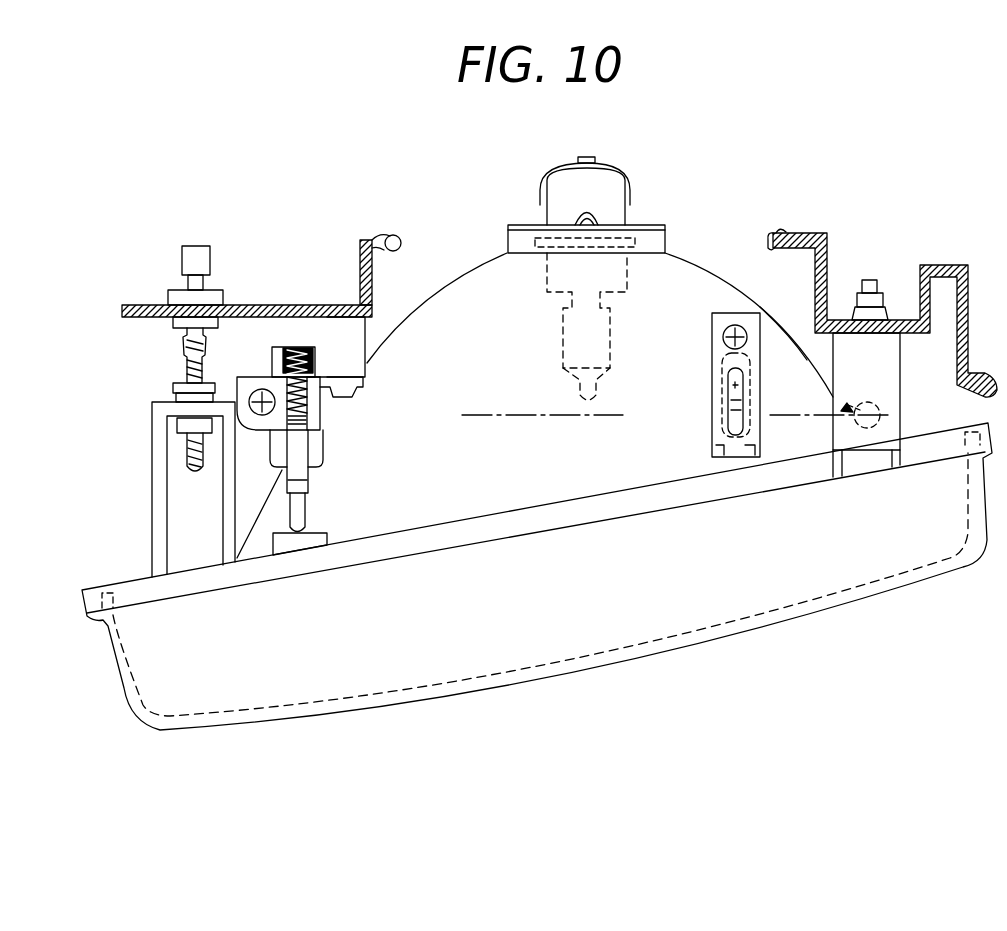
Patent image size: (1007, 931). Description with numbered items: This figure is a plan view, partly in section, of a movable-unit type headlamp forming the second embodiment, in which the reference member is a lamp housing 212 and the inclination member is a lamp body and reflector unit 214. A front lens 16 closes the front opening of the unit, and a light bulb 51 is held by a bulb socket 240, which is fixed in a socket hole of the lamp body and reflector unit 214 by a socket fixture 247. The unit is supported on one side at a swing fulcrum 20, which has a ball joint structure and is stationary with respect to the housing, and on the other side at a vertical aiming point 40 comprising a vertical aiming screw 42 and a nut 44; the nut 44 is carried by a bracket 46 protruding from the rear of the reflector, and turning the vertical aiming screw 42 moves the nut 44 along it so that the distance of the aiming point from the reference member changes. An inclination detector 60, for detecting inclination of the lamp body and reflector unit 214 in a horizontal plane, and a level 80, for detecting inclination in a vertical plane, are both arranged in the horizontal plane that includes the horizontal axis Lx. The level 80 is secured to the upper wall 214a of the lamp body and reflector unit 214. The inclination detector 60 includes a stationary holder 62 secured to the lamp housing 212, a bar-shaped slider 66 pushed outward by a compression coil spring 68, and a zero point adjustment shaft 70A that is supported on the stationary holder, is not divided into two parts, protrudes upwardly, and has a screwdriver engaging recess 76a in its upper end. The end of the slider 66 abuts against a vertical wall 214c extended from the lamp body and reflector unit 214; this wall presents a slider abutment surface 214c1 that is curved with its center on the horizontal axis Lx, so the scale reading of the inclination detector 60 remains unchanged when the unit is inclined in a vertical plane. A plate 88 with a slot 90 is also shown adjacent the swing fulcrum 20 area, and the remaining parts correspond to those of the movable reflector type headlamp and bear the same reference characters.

The front lens 16 is at (803, 613).
The swing fulcrum 20 is at (833, 400).
The vertical aiming point 40 is at (149, 324).
The vertical aiming screw 42 is at (185, 355).
The nut 44 is at (183, 423).
The bracket 46 is at (152, 498).
The light bulb 51 is at (563, 323).
The inclination detector 60 is at (373, 382).
The stationary holder 62 is at (242, 377).
The slider 66 is at (297, 472).
The compression coil spring 68 is at (363, 368).
The zero point adjustment shaft 70A is at (283, 322).
The screwdriver engaging recess 76a is at (262, 398).
The level 80 is at (777, 347).
The aiming plate 88 is at (736, 383).
The slot 90 is at (747, 422).
The lamp housing 212 is at (367, 236).
The lamp body and reflector unit 214 is at (600, 277).
The upper wall 214a is at (685, 268).
The vertical wall 214c is at (391, 516).
The slider abutment surface 214c1 is at (391, 516).
The bulb socket 240 is at (628, 167).
The socket fixture 247 is at (522, 227).
The horizontal axis Lx is at (603, 415).